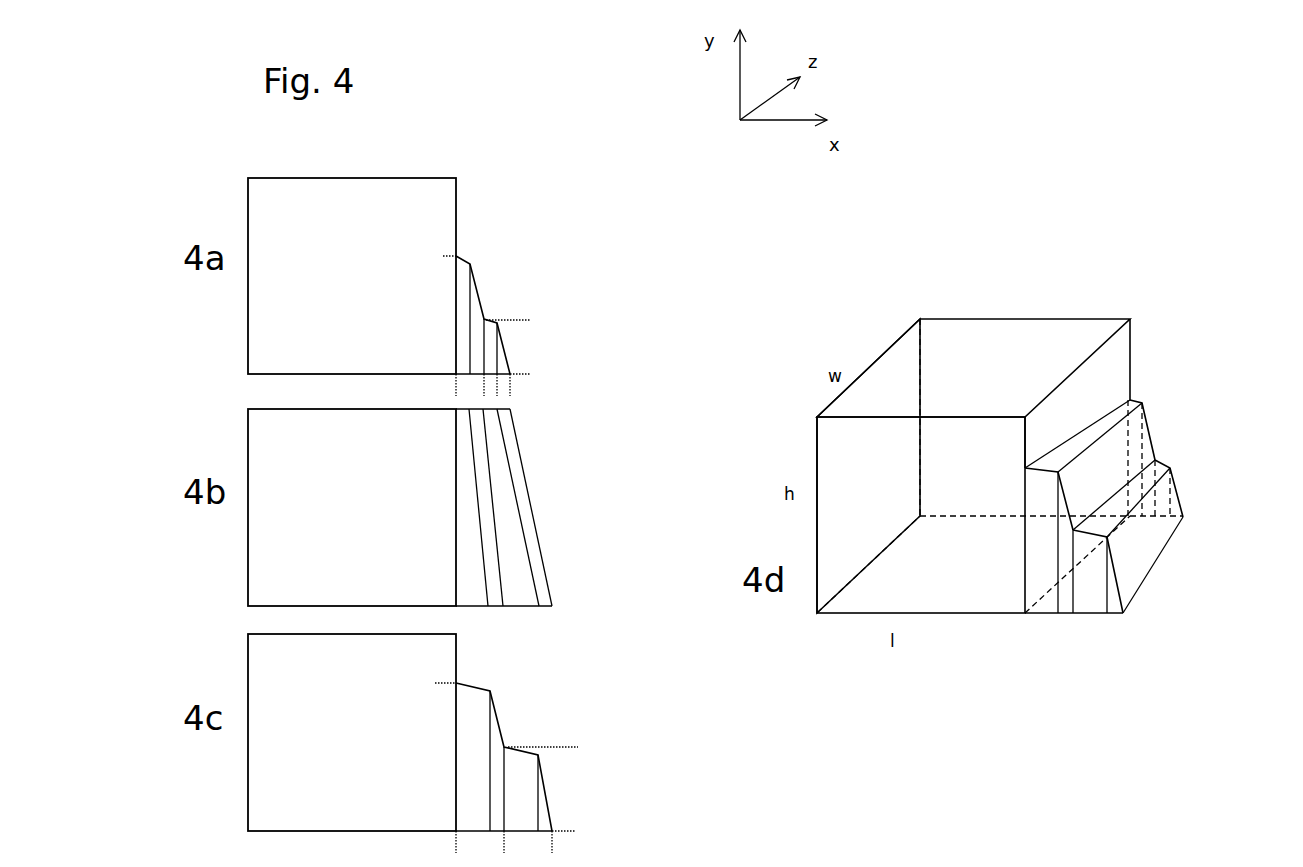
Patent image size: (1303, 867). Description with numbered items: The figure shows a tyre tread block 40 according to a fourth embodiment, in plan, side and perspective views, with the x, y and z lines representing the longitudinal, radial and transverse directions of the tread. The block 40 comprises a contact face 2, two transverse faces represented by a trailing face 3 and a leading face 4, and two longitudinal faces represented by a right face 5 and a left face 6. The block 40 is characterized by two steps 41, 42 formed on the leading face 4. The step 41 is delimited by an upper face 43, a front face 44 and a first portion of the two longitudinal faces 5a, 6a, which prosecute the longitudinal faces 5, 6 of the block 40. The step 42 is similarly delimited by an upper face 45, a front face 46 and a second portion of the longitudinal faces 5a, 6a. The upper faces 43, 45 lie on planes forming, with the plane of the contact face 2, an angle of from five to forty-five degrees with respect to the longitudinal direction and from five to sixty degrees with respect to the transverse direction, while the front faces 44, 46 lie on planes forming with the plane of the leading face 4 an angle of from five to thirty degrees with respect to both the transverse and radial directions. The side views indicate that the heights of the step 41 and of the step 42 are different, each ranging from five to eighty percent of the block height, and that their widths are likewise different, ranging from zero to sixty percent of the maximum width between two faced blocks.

The contact face 2 is at (873, 383).
The trailing face 3 is at (857, 472).
The leading face 4 is at (457, 452).
The right face 5 is at (1017, 360).
The first portion of longitudinal face 5a is at (477, 340).
The left face 6 is at (943, 544).
The second portion of longitudinal face 6a is at (483, 788).
The block 40 is at (1093, 263).
The first step 41 is at (1150, 404).
The second step 42 is at (1183, 497).
The upper face of first step 43 is at (462, 473).
The front face of first step 44 is at (483, 508).
The upper face of second step 45 is at (510, 537).
The front face of second step 46 is at (538, 578).